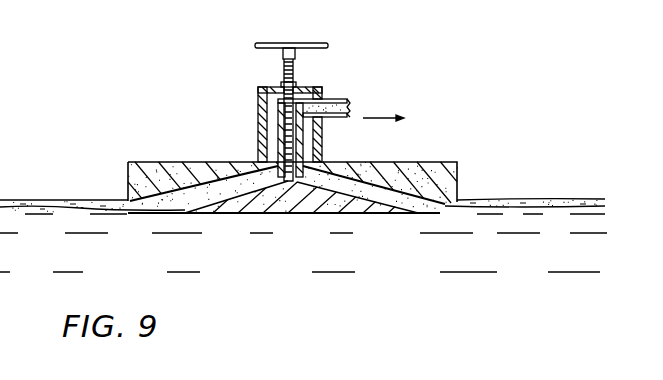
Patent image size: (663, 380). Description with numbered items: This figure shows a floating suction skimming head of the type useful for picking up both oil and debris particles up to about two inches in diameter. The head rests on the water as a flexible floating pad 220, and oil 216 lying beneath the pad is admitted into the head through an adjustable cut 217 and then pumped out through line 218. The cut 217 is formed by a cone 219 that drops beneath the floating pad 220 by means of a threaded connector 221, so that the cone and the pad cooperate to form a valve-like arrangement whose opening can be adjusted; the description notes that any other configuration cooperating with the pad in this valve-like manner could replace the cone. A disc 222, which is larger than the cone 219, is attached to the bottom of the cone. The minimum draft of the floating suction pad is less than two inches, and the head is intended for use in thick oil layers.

The oil 216 is at (156, 205).
The adjustable cut 217 is at (286, 183).
The line 218 is at (340, 99).
The cone 219 is at (336, 201).
The floating pad 220 is at (174, 167).
The threaded connector 221 is at (285, 73).
The disc 222 is at (167, 210).